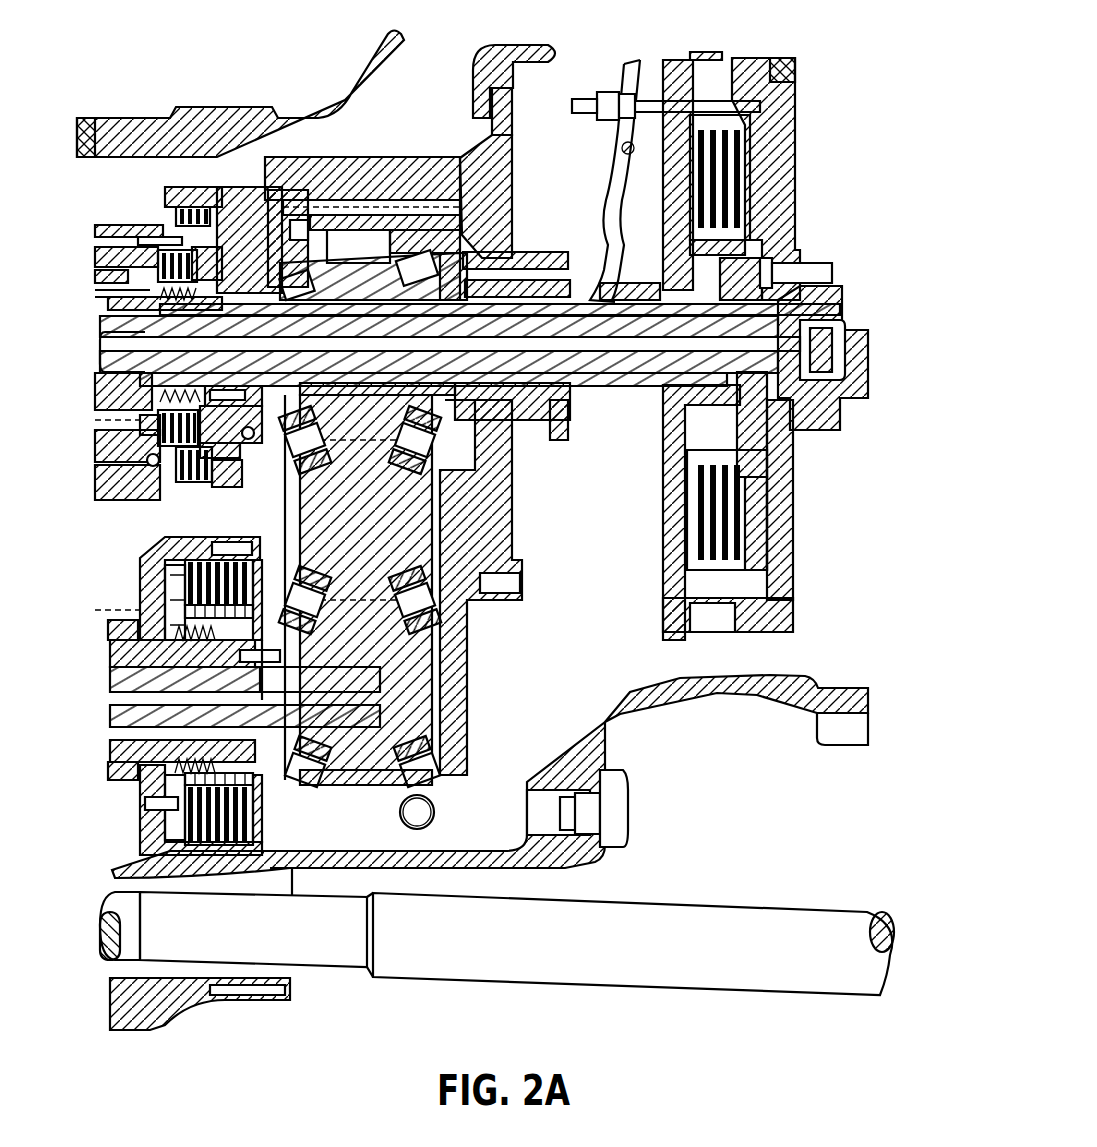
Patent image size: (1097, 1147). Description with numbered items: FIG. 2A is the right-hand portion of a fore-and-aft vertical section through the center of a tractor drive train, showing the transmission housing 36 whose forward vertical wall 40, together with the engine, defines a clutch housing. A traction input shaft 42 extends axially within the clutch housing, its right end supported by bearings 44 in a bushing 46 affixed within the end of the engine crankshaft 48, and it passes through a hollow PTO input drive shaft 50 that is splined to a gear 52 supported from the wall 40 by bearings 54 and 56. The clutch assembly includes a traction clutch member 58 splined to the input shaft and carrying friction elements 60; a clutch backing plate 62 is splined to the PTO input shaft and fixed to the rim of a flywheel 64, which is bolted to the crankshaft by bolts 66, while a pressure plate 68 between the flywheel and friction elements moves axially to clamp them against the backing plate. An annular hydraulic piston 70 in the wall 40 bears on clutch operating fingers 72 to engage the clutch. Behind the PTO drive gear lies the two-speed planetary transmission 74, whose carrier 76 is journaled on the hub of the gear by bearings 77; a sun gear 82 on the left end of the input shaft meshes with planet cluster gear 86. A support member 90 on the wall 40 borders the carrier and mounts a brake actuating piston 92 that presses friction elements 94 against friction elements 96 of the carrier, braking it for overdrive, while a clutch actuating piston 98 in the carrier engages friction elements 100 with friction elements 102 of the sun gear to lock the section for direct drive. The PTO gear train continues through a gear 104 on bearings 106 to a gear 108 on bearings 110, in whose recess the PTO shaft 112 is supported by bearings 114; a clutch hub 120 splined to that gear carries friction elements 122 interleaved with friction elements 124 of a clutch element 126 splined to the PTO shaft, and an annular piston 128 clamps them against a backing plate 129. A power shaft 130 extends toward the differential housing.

The transmission housing 36 is at (133, 128).
The forward vertical wall 40 is at (490, 160).
The traction input shaft 42 is at (636, 373).
The bearings 44 is at (843, 327).
The bushing 46 is at (835, 355).
The engine crankshaft 48 is at (843, 295).
The PTO input drive shaft 50 is at (623, 306).
The PTO drive gear 52 is at (330, 302).
The bearing 54 is at (312, 283).
The bearing 56 is at (398, 272).
The traction clutch member 58 is at (742, 290).
The friction elements 60 is at (707, 244).
The clutch backing plate 62 is at (672, 64).
The flywheel 64 is at (793, 106).
The bolts 66 is at (800, 268).
The pressure plate 68 is at (760, 192).
The annular hydraulic piston 70 is at (562, 418).
The clutch operating fingers 72 is at (588, 222).
The planetary transmission 74 is at (111, 210).
The carrier 76 is at (98, 226).
The bearings 77 is at (268, 303).
The sun gear 82 is at (105, 286).
The planet cluster gear 86 is at (115, 497).
The support member 90 is at (222, 195).
The brake actuating piston 92 is at (236, 470).
The friction elements 94 is at (208, 492).
The friction elements 96 is at (178, 495).
The clutch actuating piston 98 is at (212, 305).
The friction elements 100 is at (128, 245).
The friction elements 102 is at (112, 300).
The gear 104 is at (430, 515).
The bearings 106 is at (285, 482).
The gear 108 is at (378, 780).
The bearings 110 is at (455, 663).
The PTO shaft 112 is at (115, 712).
The bearings 114 is at (280, 672).
The clutch hub 120 is at (280, 656).
The friction elements 122 is at (262, 810).
The friction elements 124 is at (258, 838).
The clutch element 126 is at (150, 556).
The annular piston 128 is at (140, 596).
The backing plate 129 is at (288, 555).
The power shaft 130 is at (458, 939).